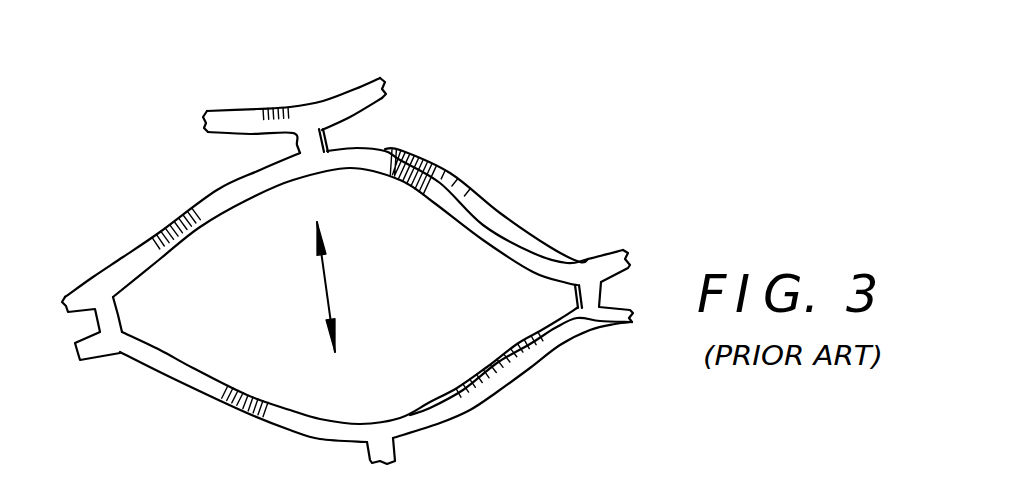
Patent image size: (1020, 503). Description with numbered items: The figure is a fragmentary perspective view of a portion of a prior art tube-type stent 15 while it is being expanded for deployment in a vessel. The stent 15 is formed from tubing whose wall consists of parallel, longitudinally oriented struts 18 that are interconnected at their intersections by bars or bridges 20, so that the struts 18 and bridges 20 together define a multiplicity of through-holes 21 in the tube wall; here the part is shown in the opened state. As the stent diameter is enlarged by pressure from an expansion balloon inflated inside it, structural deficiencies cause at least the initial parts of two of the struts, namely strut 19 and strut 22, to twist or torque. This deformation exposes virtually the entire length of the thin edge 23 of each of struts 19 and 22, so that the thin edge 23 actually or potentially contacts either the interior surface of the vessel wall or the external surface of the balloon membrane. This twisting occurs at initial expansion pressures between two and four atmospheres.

The tube-type stent 15 is at (140, 213).
The struts 18 is at (213, 392).
The strut 19 is at (475, 228).
The bars or bridges 20 is at (107, 316).
The through-holes 21 is at (240, 213).
The strut 22 is at (553, 335).
The thin edge 23 is at (443, 173).